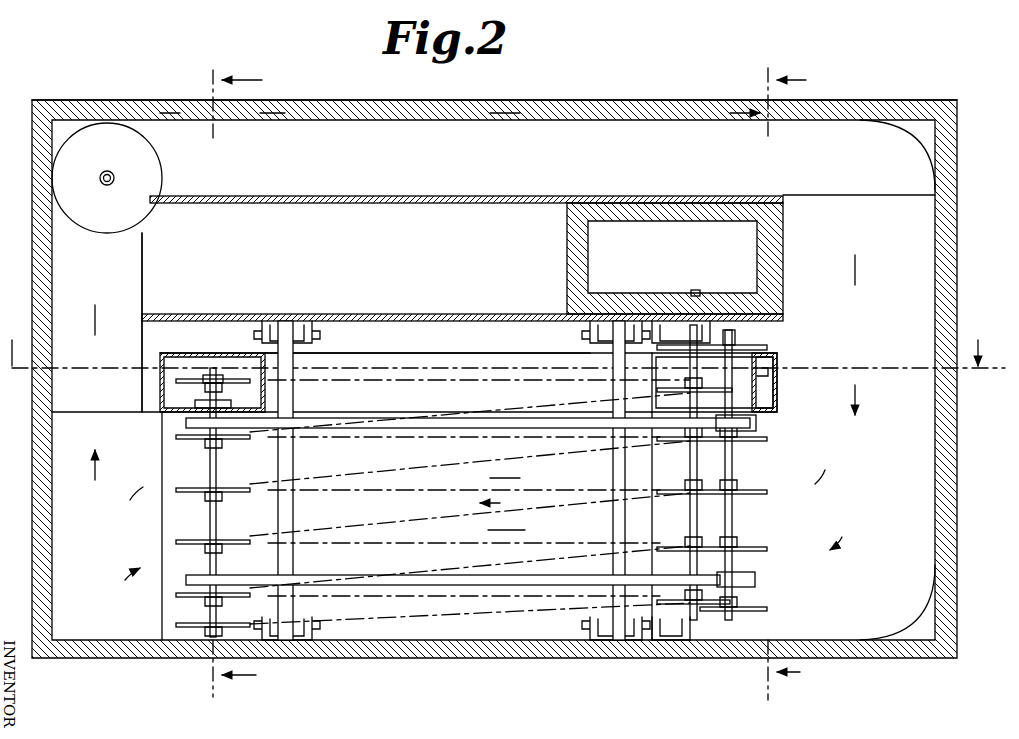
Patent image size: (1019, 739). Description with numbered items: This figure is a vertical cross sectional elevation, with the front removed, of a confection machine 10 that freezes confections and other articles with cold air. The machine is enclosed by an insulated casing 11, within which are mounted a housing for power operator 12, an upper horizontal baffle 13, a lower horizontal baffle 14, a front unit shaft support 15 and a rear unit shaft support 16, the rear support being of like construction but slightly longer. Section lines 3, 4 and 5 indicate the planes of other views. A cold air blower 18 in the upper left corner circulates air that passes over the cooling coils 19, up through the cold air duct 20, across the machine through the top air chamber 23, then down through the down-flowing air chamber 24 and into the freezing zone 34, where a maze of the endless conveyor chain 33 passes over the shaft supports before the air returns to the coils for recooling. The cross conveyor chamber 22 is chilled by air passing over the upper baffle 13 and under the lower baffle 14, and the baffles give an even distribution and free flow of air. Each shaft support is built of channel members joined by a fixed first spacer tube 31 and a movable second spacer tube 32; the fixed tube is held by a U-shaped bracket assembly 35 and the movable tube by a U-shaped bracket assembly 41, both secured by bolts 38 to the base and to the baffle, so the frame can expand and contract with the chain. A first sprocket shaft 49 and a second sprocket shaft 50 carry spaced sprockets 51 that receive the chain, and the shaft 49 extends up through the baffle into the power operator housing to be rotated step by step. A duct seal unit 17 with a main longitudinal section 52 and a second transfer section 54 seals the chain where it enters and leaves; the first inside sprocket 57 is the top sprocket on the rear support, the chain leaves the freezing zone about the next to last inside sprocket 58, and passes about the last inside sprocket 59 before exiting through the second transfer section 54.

The section line 3- 3 is at (503, 342).
The section line 4- 4 is at (794, 384).
The section line 5- 5 is at (248, 385).
The confection machine 10 is at (630, 96).
The casing 11 is at (957, 208).
The housing for power operator 12 is at (745, 233).
The upper horizontal baffle 13 is at (388, 196).
The lower horizontal baffle 14 is at (430, 313).
The front unit shaft support 15 is at (686, 530).
The rear unit shaft support 16 is at (742, 523).
The duct seal unit 17 is at (446, 352).
The cold air blower 18 is at (156, 170).
The cooling coils 19 is at (124, 472).
The cold air duct 20 is at (142, 272).
The cross conveyor chamber 22 is at (265, 322).
The top air chamber 23 is at (572, 123).
The down-flowing air chamber 24 is at (836, 402).
The first spacer tube 31 is at (292, 458).
The second spacer tube 32 is at (612, 465).
The endless conveyor chain 33 is at (374, 506).
The freezing zone 34 is at (471, 502).
The U-shaped bracket assembly 35 is at (586, 338).
The bolts 38 is at (298, 320).
The U-shaped bracket assembly 41 is at (258, 334).
The first sprocket shaft 49 is at (697, 290).
The second sprocket shaft 50 is at (210, 515).
The sprockets 51 is at (178, 440).
The main longitudinal section 52 is at (372, 352).
The second transfer section 54 is at (165, 398).
The first inside sprocket 57 is at (777, 374).
The next to last inside sprocket 58 is at (676, 392).
The last inside sprocket 59 is at (192, 381).